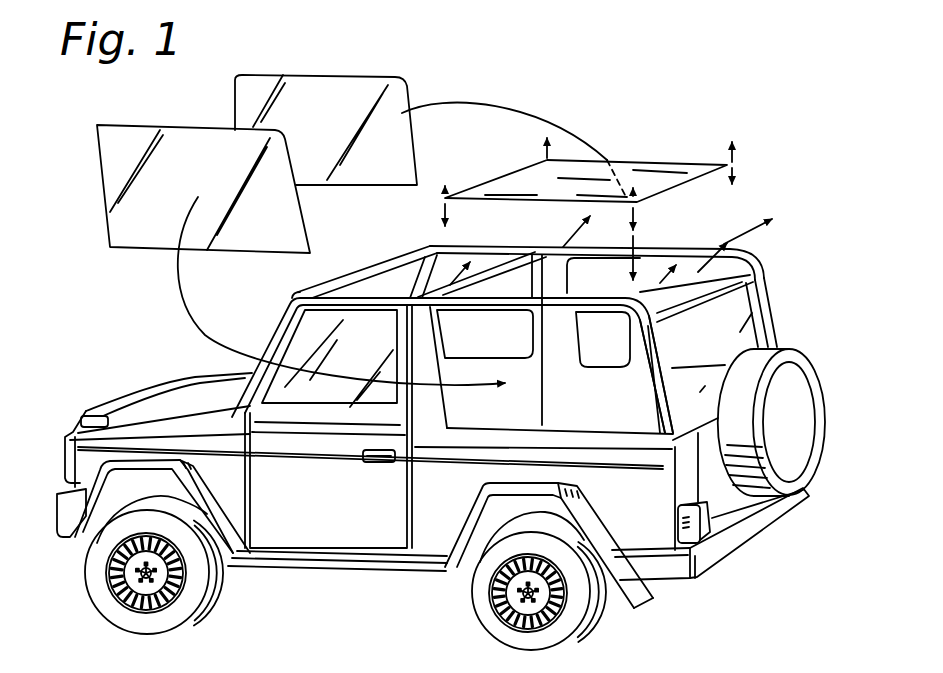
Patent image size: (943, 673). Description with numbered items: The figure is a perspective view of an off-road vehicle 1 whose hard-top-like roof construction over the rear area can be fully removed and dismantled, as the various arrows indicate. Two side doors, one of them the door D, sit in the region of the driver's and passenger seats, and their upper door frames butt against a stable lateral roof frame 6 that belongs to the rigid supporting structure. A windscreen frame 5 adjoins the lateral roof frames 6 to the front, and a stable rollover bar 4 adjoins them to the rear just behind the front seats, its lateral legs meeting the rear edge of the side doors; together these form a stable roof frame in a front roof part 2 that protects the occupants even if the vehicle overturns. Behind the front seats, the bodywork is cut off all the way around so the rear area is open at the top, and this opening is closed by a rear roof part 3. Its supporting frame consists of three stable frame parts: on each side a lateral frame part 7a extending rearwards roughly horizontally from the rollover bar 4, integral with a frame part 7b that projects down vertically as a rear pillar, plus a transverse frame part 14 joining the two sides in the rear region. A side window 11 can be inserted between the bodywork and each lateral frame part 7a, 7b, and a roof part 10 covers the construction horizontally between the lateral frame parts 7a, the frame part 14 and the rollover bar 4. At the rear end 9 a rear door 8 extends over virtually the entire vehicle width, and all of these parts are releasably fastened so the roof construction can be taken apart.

The off-road vehicle 1 is at (70, 362).
The front roof part 2 is at (393, 280).
The rear roof part 3 is at (662, 252).
The rollover bar 4 is at (494, 265).
The windscreen frame 5 is at (322, 298).
The lateral roof frame 6 is at (357, 297).
The lateral frame part 7a is at (703, 250).
The frame part 7b is at (660, 353).
The rear door 8 is at (713, 458).
The rear end 9 is at (707, 388).
The roof part 10 is at (637, 162).
The side window 11 is at (247, 97).
The frame part 14 is at (752, 284).
The door D is at (320, 533).